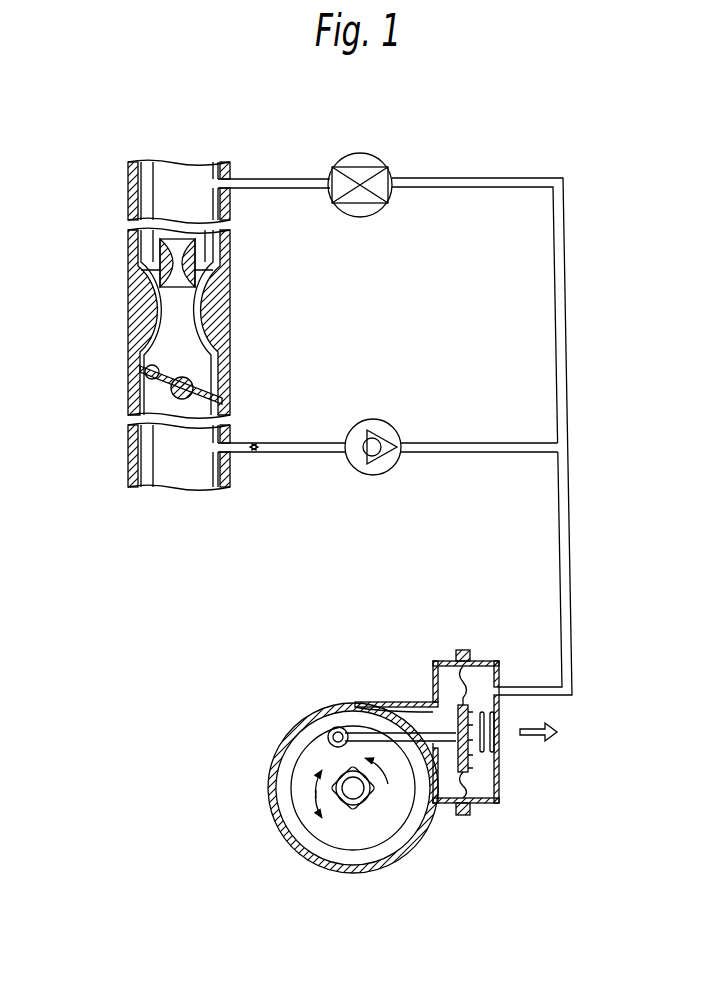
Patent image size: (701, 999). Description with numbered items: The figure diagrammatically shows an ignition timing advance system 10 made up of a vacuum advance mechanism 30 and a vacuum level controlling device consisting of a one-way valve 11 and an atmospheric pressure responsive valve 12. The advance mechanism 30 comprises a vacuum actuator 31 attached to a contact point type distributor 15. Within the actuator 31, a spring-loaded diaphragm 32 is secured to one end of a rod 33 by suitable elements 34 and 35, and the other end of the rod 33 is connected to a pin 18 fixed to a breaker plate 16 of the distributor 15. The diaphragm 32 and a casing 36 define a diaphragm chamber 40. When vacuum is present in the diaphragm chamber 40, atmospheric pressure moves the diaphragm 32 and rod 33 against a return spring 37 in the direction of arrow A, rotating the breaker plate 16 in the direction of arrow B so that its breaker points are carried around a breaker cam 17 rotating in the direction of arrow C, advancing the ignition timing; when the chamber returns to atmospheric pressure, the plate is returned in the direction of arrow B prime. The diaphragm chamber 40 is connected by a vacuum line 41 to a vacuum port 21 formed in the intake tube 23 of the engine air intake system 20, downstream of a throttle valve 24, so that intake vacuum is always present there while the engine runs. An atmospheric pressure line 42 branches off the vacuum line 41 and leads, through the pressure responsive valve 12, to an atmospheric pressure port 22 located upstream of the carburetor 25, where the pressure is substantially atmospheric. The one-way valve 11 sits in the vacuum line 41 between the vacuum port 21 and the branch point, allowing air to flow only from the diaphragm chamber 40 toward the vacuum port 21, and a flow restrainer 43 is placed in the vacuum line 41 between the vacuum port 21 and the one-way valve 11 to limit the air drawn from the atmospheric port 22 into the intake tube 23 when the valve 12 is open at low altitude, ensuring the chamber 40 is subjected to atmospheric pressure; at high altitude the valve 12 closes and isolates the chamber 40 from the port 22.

The ignition timing advance system 10 is at (554, 152).
The one-way valve 11 is at (380, 421).
The atmospheric pressure responsive valve 12 is at (364, 164).
The distributor 15 is at (282, 854).
The breaker plate 16 is at (368, 836).
The breaker cam 17 is at (370, 804).
The pin 18 is at (330, 727).
The air intake system 20 is at (104, 254).
The vacuum port 21 is at (215, 487).
The atmospheric pressure port 22 is at (212, 182).
The intake tube 23 is at (131, 469).
The throttle valve 24 is at (137, 381).
The carburetor 25 is at (153, 320).
The vacuum advance mechanism 30 is at (555, 786).
The vacuum actuator 31 is at (492, 804).
The diaphragm 32 is at (440, 660).
The rod 33 is at (404, 702).
The securing element 34 is at (417, 702).
The securing element 35 is at (483, 668).
The casing 36 is at (463, 816).
The return spring 37 is at (490, 755).
The diaphragm chamber 40 is at (499, 674).
The vacuum line 41 is at (556, 496).
The atmospheric pressure line 42 is at (554, 240).
The flow restrainer 43 is at (256, 454).